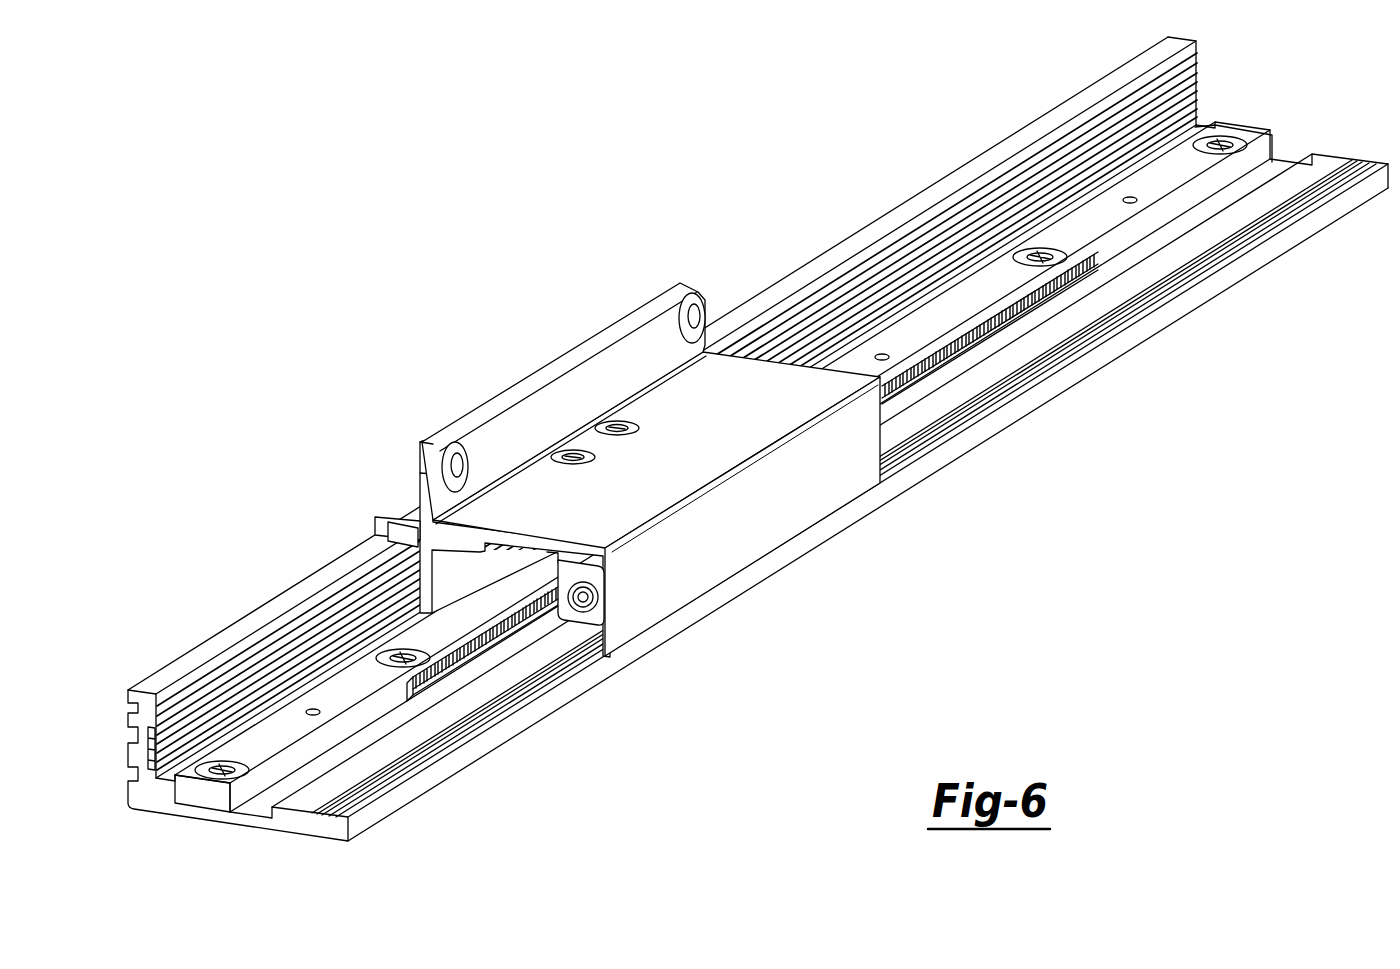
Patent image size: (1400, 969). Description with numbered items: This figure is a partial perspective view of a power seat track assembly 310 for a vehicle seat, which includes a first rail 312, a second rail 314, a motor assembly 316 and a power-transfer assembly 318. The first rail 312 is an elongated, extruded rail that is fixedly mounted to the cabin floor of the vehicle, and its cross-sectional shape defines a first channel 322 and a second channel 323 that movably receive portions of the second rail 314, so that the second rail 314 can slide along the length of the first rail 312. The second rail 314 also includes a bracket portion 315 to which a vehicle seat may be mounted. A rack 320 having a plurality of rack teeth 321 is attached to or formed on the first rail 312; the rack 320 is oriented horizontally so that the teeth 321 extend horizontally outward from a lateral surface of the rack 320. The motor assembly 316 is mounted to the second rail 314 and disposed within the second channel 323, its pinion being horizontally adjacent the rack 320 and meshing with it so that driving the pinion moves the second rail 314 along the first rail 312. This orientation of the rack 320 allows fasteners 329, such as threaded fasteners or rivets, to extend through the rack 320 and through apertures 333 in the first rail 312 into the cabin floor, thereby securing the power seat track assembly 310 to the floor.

The power seat track assembly 310 is at (360, 328).
The first rail 312 is at (136, 820).
The second rail 314 is at (796, 487).
The bracket portion 315 is at (665, 405).
The motor assembly 316 is at (583, 642).
The power-transfer assembly 318 is at (136, 755).
The rack 320 is at (336, 694).
The rack teeth 321 is at (467, 672).
The first channel 322 is at (403, 520).
The second channel 323 is at (452, 590).
The fastener 329 is at (217, 760).
The aperture 333 is at (247, 762).